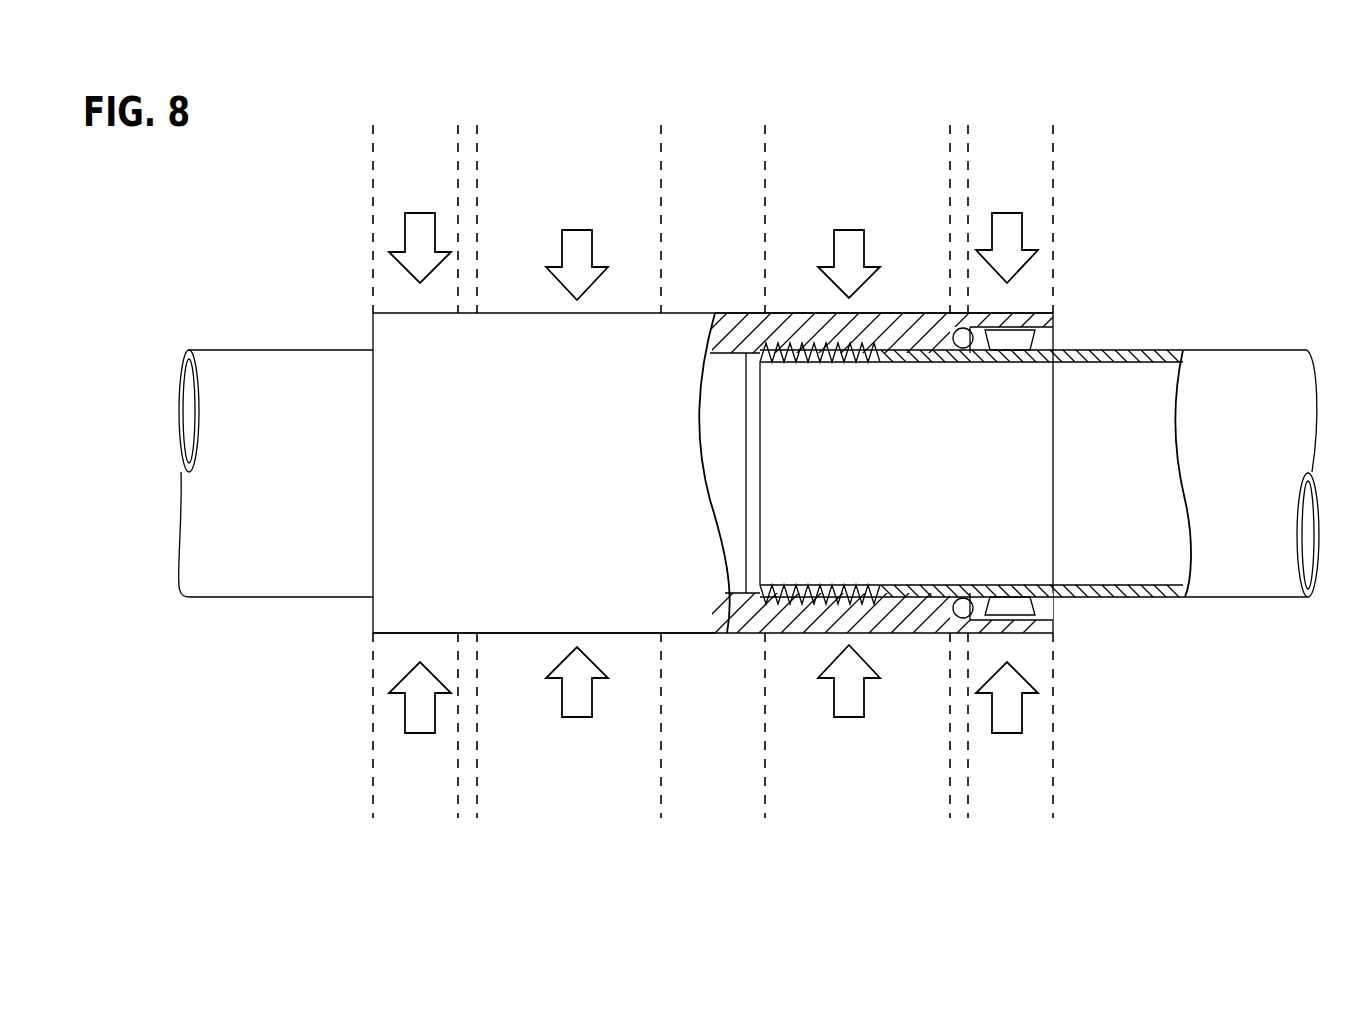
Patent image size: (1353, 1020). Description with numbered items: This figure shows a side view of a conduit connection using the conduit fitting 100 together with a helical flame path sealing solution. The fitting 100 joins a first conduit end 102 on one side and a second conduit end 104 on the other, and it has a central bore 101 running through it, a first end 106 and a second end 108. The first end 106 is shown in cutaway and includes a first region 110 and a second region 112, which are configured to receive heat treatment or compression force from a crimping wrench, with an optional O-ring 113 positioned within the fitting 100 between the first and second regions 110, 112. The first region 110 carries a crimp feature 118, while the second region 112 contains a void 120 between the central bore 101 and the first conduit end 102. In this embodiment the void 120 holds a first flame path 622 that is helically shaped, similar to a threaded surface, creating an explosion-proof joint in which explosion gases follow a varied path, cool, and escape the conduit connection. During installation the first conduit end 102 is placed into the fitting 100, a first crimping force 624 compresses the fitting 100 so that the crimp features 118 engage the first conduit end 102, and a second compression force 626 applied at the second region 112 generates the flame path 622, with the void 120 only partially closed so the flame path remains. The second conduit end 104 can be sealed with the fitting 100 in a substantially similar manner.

The conduit fitting 100 is at (517, 335).
The central bore 101 is at (721, 350).
The first conduit end 102 is at (1255, 575).
The second conduit end 104 is at (242, 570).
The first end 106 is at (808, 636).
The second end 108 is at (390, 565).
The first region 110 is at (1013, 148).
The second region 112 is at (864, 342).
The O-ring 113 is at (966, 331).
The crimp feature 118 is at (1010, 345).
The void 120 is at (757, 360).
The first flame path 622 is at (862, 603).
The first crimping force 624 is at (1007, 234).
The second compression force 626 is at (849, 255).